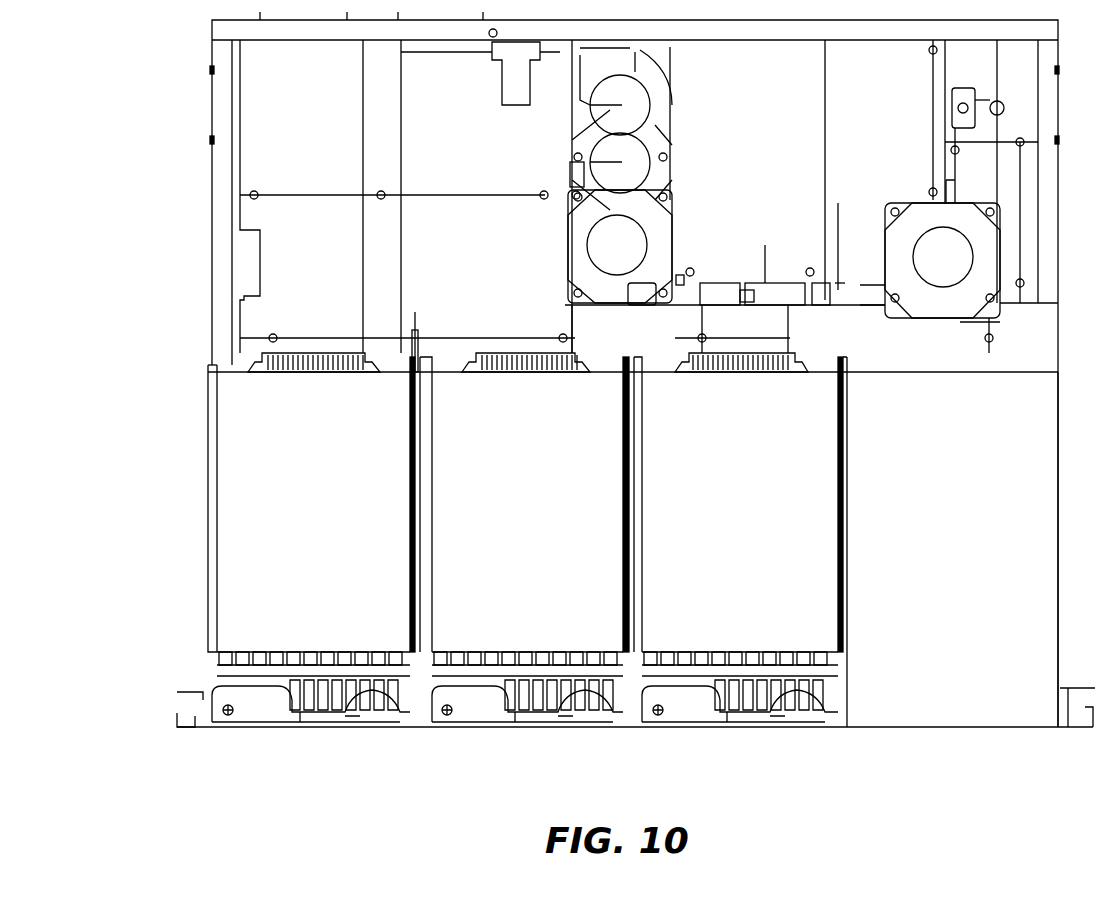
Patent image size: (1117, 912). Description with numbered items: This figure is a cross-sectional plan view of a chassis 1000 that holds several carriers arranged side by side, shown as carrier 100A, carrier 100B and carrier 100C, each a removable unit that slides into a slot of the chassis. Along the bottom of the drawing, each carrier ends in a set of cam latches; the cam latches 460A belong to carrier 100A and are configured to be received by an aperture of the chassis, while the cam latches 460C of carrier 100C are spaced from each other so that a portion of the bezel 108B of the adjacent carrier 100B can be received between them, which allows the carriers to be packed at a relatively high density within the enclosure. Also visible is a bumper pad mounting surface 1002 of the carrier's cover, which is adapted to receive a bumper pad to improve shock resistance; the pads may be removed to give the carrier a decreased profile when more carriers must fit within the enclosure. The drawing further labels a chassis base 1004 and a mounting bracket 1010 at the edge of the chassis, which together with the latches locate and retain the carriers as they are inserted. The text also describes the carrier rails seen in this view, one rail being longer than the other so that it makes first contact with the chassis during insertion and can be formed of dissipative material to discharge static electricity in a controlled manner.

The computer system chassis 1000 is at (198, 334).
The carrier 100A is at (342, 519).
The carrier 100B is at (556, 519).
The carrier 100C is at (766, 519).
The bezel 108B is at (605, 688).
The cam latches 460A is at (207, 712).
The cam latches 460C is at (632, 713).
The bumper pad mounting surface 1002 is at (752, 733).
The base 1004 is at (942, 733).
The mounting bracket 1010 is at (182, 707).